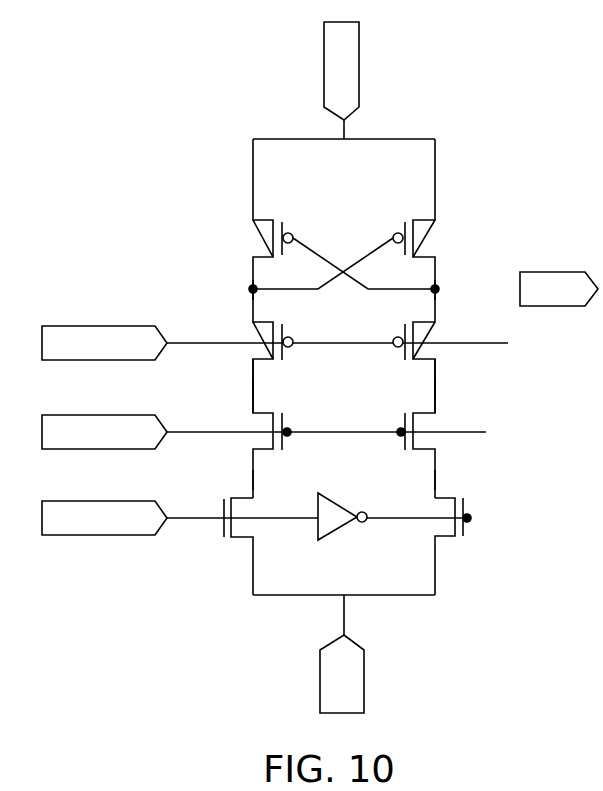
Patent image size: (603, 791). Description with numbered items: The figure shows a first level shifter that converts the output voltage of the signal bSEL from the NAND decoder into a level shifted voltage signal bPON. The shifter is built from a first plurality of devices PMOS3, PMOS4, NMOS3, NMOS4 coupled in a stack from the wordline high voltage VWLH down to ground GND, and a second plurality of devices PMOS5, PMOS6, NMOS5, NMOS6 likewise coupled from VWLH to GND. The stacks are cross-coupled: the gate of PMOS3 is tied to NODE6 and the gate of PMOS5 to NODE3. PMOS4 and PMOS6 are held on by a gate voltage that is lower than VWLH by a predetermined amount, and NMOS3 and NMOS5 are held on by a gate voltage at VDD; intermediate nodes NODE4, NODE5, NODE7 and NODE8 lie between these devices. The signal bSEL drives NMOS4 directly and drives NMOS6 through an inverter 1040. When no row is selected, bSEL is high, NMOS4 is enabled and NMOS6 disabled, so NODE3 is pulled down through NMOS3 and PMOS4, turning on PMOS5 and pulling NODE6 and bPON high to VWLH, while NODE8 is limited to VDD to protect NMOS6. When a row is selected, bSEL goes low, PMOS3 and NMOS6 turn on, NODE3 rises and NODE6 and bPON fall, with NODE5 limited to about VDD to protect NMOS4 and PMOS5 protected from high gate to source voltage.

The inverter 1040 is at (338, 531).
The PMOS transistor PMOS3 is at (258, 245).
The PMOS transistor PMOS4 is at (261, 350).
The PMOS transistor PMOS5 is at (430, 245).
The PMOS transistor PMOS6 is at (427, 350).
The NMOS transistor NMOS3 is at (261, 441).
The NMOS transistor NMOS4 is at (241, 539).
The NMOS transistor NMOS5 is at (427, 441).
The NMOS transistor NMOS6 is at (446, 539).
The circuit node NODE3 is at (219, 288).
The circuit node NODE4 is at (255, 393).
The circuit node NODE5 is at (255, 483).
The circuit node NODE6 is at (469, 276).
The circuit node NODE7 is at (434, 393).
The circuit node NODE8 is at (434, 483).
The wordline high voltage VWLH is at (312, 71).
The supply voltage VDD is at (104, 432).
The bSEL signal bSEL is at (104, 518).
The bPON signal bPON is at (559, 289).
The ground GND is at (342, 674).